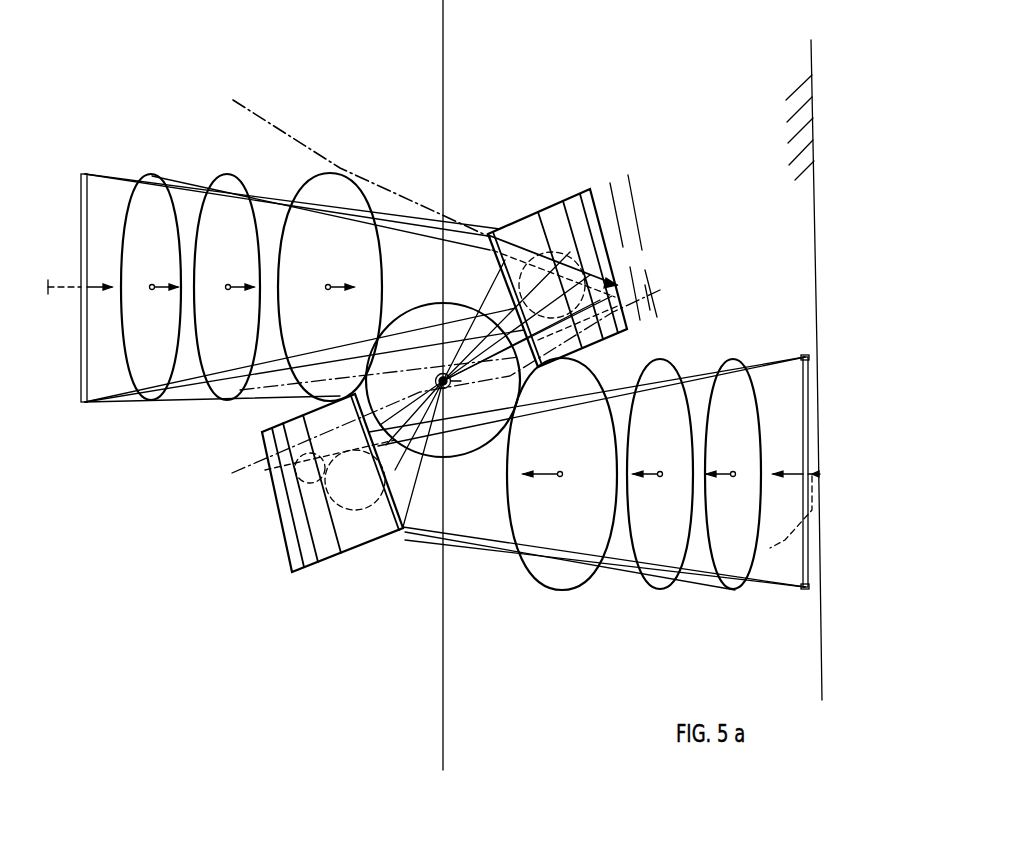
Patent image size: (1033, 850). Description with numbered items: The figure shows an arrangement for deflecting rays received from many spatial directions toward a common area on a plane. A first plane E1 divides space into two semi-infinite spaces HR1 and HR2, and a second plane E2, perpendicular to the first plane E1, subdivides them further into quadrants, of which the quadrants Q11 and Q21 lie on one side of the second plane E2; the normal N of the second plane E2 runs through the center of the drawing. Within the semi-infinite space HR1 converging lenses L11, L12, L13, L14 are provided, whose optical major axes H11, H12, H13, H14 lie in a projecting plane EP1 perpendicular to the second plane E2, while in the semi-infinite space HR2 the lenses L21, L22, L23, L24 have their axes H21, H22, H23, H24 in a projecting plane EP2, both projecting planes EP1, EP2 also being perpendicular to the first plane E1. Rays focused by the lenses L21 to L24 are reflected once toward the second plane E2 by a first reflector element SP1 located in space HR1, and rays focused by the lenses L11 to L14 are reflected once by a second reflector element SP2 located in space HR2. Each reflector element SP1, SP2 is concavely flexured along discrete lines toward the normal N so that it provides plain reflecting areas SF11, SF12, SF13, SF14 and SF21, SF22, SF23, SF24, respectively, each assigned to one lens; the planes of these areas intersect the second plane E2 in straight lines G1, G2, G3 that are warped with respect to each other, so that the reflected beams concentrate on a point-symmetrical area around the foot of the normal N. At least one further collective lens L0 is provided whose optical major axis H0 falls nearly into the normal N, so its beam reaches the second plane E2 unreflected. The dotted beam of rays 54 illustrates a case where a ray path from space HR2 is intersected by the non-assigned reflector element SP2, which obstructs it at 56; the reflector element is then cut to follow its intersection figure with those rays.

The first semi-infinite space HR1 is at (662, 38).
The second semi-infinite space HR2 is at (162, 38).
The quadrant Q11 is at (705, 130).
The quadrant Q21 is at (251, 54).
The dotted beam of rays 54 is at (287, 135).
The obstruction location on reflector element SP2 56 is at (260, 470).
The first plane E1 is at (444, 712).
The second plane E2 is at (793, 370).
The further collective lens L0 is at (408, 312).
The normal N is at (433, 381).
The optical major axis of lens L0 H0 is at (467, 380).
The converging lens L11 is at (804, 590).
The converging lens L12 is at (736, 580).
The converging lens L13 is at (663, 580).
The converging lens L14 is at (556, 580).
The converging lens L21 is at (84, 172).
The converging lens L22 is at (150, 198).
The converging lens L23 is at (218, 210).
The converging lens L24 is at (335, 185).
The optical major axis H11 is at (795, 472).
The optical major axis H12 is at (725, 459).
The optical major axis H13 is at (651, 459).
The optical major axis H14 is at (543, 459).
The optical major axis H21 is at (90, 290).
The optical major axis H22 is at (158, 304).
The optical major axis H23 is at (235, 304).
The optical major axis H24 is at (336, 304).
The projecting plane EP1 is at (786, 525).
The projecting plane EP2 is at (48, 280).
The first reflector element SP1 is at (518, 195).
The second reflector element SP2 is at (326, 578).
The plain reflecting area SF11 is at (505, 233).
The plain reflecting area SF12 is at (548, 213).
The plain reflecting area SF13 is at (580, 202).
The plain reflecting area SF14 is at (592, 222).
The plain reflecting area SF21 is at (373, 537).
The plain reflecting area SF22 is at (338, 547).
The plain reflecting area SF23 is at (312, 553).
The plain reflecting area SF24 is at (292, 532).
The straight intersection line G1 is at (620, 252).
The straight intersection line G2 is at (632, 266).
The straight intersection line G3 is at (652, 300).